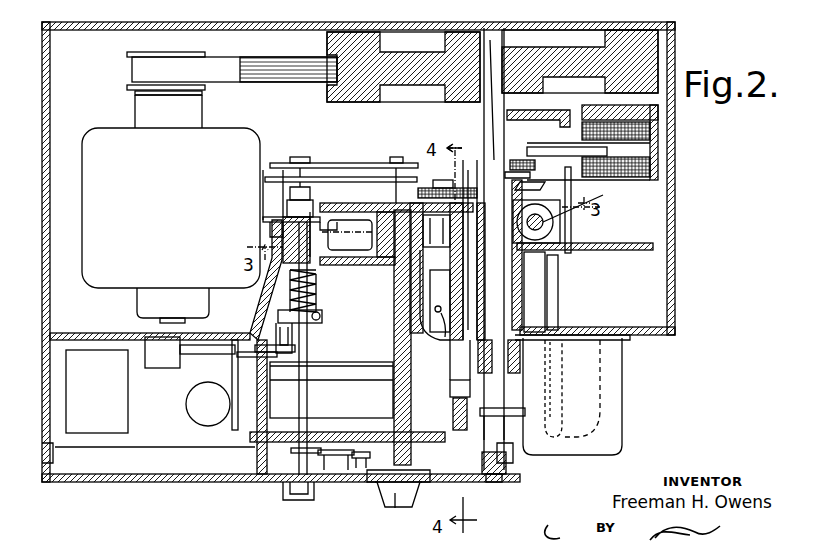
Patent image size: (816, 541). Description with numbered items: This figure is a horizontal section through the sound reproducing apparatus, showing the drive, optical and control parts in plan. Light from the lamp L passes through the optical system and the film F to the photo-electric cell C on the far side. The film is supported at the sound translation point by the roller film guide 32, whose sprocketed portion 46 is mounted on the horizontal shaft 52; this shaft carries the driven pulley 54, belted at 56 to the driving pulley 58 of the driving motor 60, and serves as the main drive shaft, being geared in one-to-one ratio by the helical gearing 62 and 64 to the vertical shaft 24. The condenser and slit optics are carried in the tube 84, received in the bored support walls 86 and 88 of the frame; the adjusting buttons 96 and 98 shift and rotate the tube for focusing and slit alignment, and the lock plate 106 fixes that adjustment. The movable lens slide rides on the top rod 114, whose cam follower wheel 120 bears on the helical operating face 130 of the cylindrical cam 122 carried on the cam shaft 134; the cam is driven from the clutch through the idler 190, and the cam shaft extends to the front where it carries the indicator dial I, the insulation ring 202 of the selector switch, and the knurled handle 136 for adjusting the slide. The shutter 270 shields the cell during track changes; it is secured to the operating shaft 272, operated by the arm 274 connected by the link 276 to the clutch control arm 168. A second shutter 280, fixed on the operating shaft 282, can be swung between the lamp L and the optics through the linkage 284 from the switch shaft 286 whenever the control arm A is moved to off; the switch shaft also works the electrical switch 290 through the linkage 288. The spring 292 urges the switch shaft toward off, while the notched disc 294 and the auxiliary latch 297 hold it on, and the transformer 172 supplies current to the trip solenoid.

The driving pulley 58 is at (140, 52).
The belt 56 is at (231, 75).
The driving motor 60 is at (86, 165).
The linkage 288 is at (197, 343).
The electrical switch 290 is at (147, 350).
The light shutter 280 is at (232, 428).
The lamp L is at (186, 404).
The transformer 172 is at (97, 391).
The driven pulley 54 is at (345, 100).
The horizontal shaft 52 is at (497, 67).
The clutch control arm 168 is at (537, 143).
The vertical shaft 24 is at (588, 172).
The link 276 is at (530, 169).
The arm 274 is at (534, 192).
The helical gear 64 is at (556, 224).
The operating shaft 272 is at (572, 244).
The helical gear 62 is at (535, 256).
The shutter 270 is at (553, 452).
The film F is at (522, 393).
The photo-electric cell C is at (592, 400).
The cam shaft 134 is at (393, 302).
The helical operating face 130 is at (344, 222).
The cylindrical cam 122 is at (352, 203).
The idler 190 is at (420, 185).
The notched disc 294 is at (278, 212).
The auxiliary latch 297 is at (268, 220).
The linkage 284 is at (285, 325).
The spring 292 is at (312, 293).
The switch shaft 286 is at (316, 323).
The operating shaft 282 is at (252, 343).
The bored support wall 86 is at (266, 368).
The bored support wall 88 is at (405, 352).
The tube 84 is at (363, 383).
The cam follower wheel 120 is at (438, 303).
The top rod 114 is at (458, 303).
The sprocketed portion 46 is at (485, 385).
The roller film guide 32 is at (503, 408).
The knurled handle 136 is at (470, 483).
The lock plate 106 is at (335, 457).
The adjusting button 96 is at (320, 460).
The adjusting button 98 is at (356, 462).
The insulation ring 202 is at (369, 482).
The indicator dial I is at (397, 509).
The control arm A is at (297, 494).